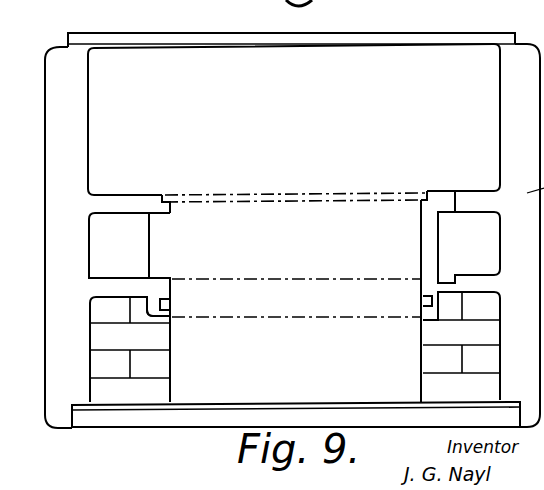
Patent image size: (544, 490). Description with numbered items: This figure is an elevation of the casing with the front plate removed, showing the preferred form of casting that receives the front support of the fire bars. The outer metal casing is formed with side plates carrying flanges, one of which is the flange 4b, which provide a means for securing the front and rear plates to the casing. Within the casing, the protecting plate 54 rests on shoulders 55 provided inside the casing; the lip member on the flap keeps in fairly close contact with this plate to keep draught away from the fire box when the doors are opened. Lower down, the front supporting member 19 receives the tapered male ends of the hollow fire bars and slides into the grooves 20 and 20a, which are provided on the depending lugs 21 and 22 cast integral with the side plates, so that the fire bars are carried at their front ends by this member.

The flange 4b is at (57, 113).
The protecting plate 54 is at (200, 196).
The shoulders 55 is at (168, 204).
The front supporting member 19 is at (279, 292).
The groove 20 is at (172, 303).
The groove 20a is at (429, 301).
The depending lug 21 is at (166, 316).
The depending lug 22 is at (422, 313).